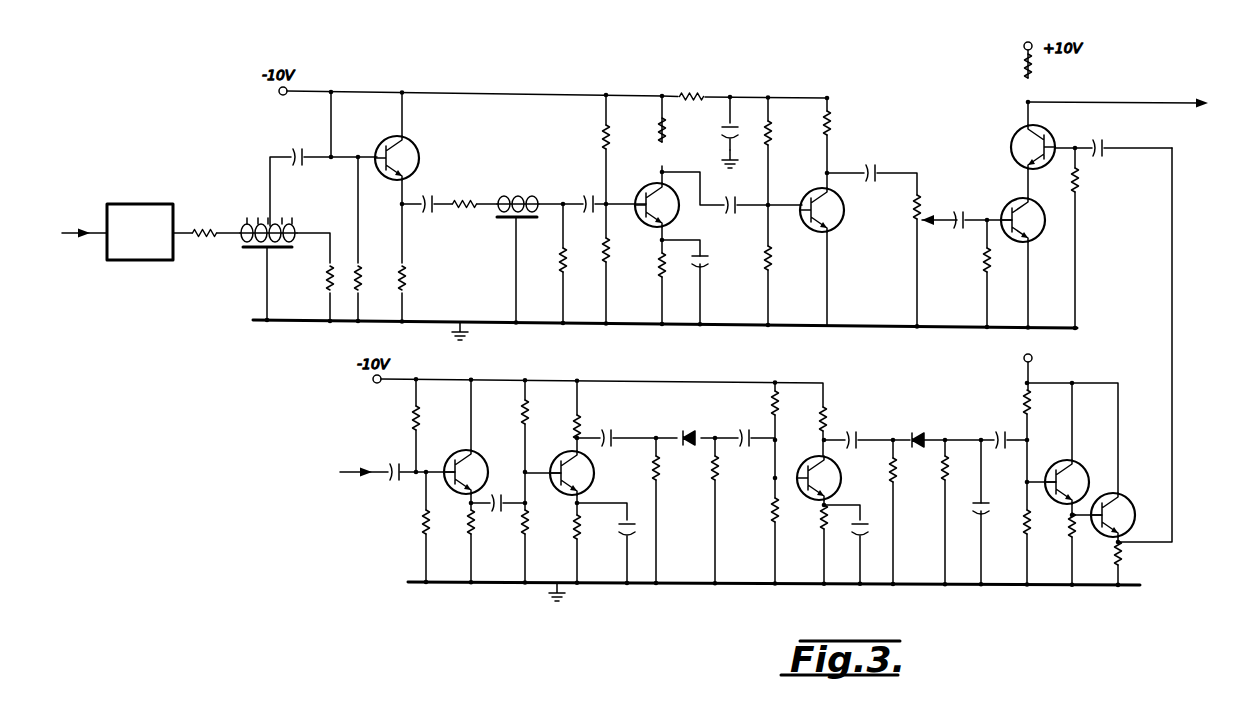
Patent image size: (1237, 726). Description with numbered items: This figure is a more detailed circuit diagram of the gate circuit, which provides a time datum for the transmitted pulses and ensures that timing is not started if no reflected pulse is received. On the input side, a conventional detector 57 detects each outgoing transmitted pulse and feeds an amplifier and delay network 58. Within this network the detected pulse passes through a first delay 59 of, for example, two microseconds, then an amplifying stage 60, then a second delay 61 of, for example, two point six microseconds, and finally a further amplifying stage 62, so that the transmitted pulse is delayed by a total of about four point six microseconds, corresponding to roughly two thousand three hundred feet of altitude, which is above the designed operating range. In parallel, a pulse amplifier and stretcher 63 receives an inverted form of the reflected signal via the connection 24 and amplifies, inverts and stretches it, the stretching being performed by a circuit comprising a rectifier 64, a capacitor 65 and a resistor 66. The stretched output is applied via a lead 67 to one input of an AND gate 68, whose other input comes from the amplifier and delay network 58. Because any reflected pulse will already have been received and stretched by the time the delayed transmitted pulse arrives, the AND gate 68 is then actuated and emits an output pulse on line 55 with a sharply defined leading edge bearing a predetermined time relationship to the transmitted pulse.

The connection 24 is at (380, 465).
The line 55 is at (1143, 101).
The detector 57 is at (134, 210).
The amplifier and delay network 58 is at (510, 183).
The first delay 59 is at (247, 210).
The amplifying stage 60 is at (425, 152).
The second delay 61 is at (527, 196).
The further amplifying stage 62 is at (767, 328).
The pulse amplifier and stretcher 63 is at (605, 370).
The rectifier 64 is at (919, 428).
The capacitor 65 is at (985, 501).
The resistor 66 is at (940, 483).
The lead 67 is at (1170, 372).
The AND gate 68 is at (1065, 363).